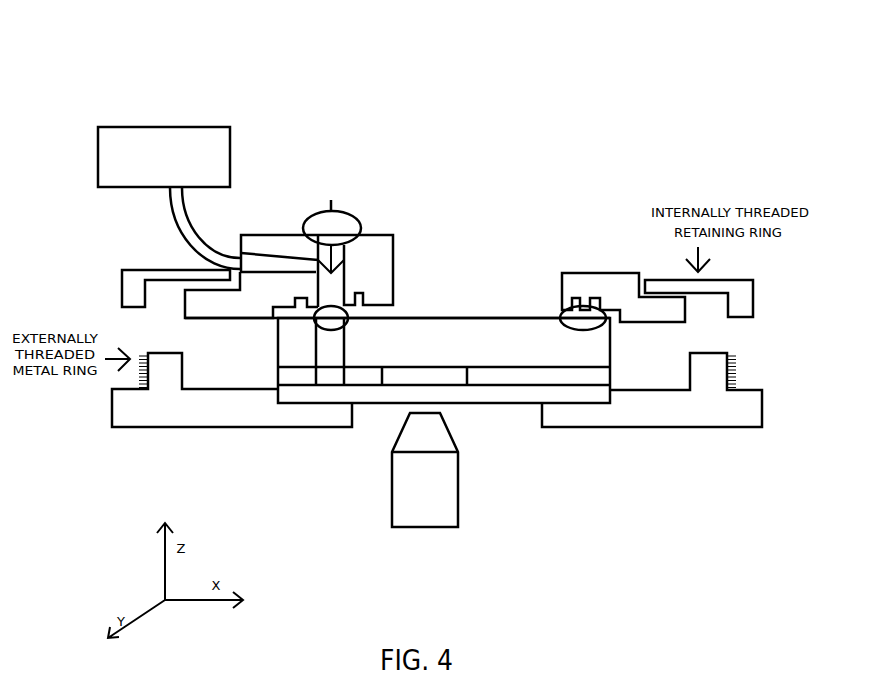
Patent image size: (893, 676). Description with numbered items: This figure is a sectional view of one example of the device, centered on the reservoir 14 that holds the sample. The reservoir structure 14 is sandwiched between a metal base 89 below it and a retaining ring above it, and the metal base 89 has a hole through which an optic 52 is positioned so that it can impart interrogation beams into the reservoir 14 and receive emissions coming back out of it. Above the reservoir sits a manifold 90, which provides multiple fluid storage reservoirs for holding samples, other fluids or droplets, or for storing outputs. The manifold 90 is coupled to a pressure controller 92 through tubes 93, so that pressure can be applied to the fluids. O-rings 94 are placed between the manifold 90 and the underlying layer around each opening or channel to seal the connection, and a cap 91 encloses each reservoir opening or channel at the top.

The reservoir 14 is at (518, 330).
The optic 52 is at (392, 482).
The metal base 89 is at (297, 427).
The manifold 90 is at (279, 210).
The cap 91 is at (376, 231).
The pressure controller 92 is at (210, 127).
The tubes 93 is at (178, 223).
The O-rings 94 is at (362, 320).